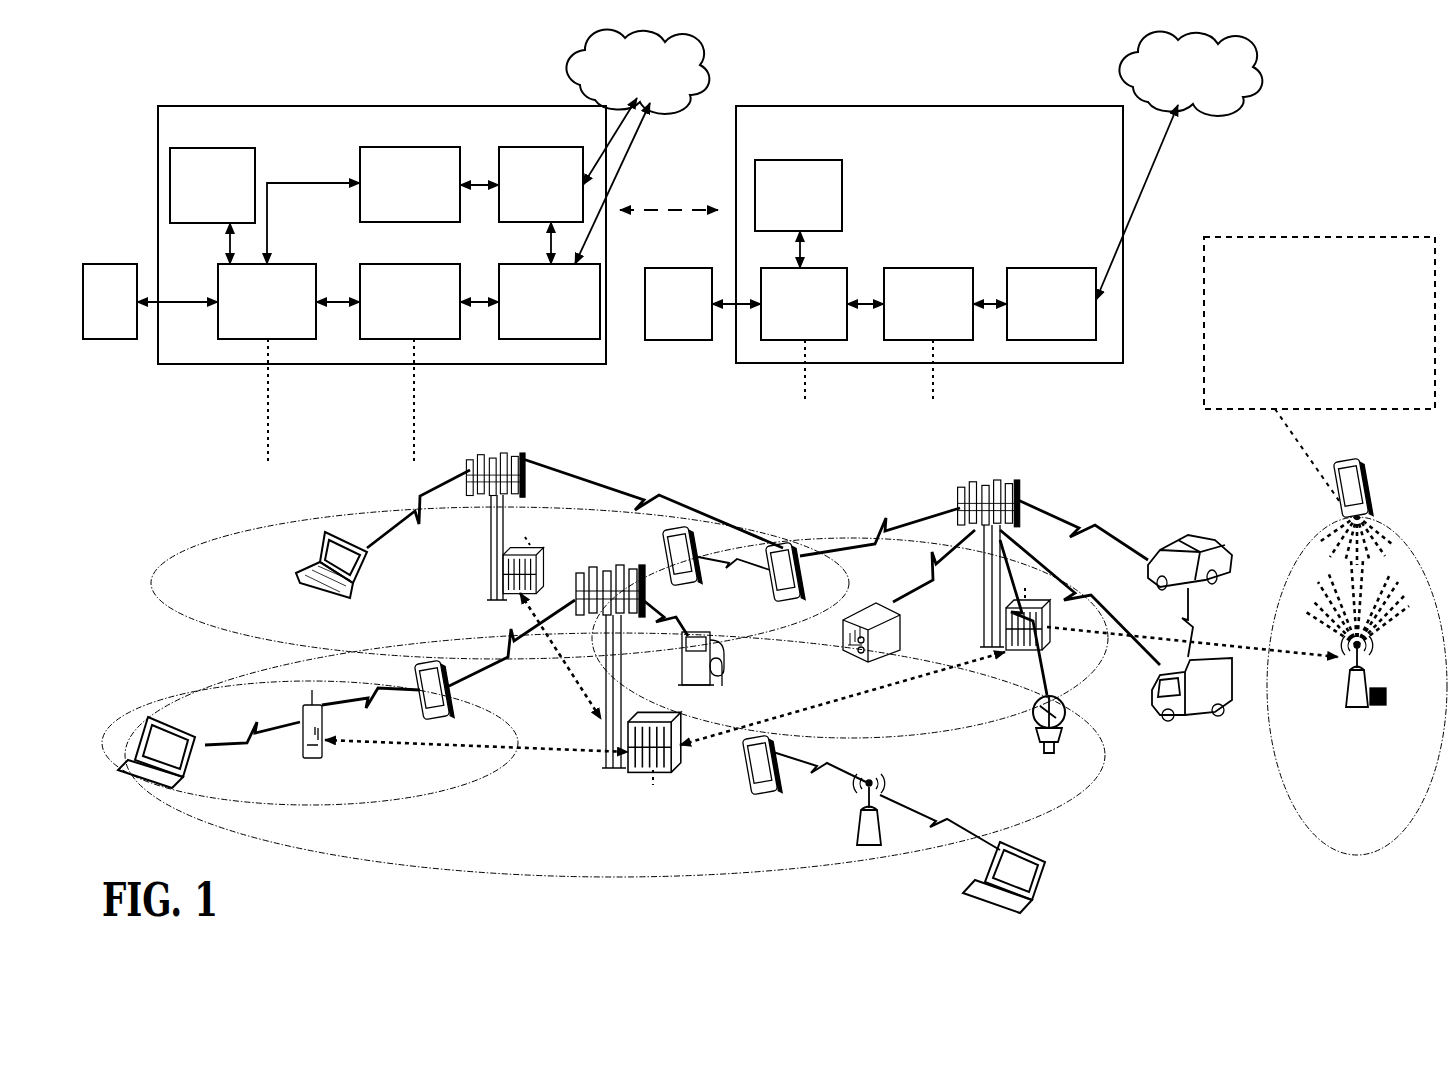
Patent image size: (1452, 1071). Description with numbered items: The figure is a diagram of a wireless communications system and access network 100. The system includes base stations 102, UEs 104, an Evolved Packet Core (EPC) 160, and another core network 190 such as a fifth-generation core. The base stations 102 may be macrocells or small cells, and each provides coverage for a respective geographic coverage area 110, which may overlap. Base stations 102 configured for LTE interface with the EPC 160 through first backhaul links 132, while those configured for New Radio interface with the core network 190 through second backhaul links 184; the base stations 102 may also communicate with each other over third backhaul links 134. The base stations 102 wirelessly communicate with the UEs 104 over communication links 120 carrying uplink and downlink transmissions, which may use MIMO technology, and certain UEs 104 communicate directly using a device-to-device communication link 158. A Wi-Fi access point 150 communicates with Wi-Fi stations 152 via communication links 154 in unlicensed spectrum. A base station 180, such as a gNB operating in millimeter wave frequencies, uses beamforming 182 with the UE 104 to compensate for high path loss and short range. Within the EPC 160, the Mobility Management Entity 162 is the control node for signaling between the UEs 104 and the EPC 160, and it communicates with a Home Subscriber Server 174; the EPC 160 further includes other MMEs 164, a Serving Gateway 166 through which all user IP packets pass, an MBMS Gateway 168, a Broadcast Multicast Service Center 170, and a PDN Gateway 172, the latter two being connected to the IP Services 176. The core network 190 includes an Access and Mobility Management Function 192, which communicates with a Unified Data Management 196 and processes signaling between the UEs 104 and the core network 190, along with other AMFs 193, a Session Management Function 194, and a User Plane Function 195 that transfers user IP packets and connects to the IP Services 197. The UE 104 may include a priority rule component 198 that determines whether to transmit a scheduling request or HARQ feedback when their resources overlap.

The wireless communications system and access network 100 is at (148, 80).
The base station 102 is at (490, 557).
The UE 104 is at (350, 598).
The geographic coverage area 110 is at (206, 640).
The communication link 120 is at (412, 492).
The first backhaul link 132 is at (530, 556).
The third backhaul link 134 is at (558, 691).
The Wi-Fi access point 150 is at (869, 848).
The Wi-Fi station 152 is at (748, 769).
The communication link 154 is at (828, 758).
The D2D communication link 158 is at (744, 583).
The Evolved Packet Core 160 is at (382, 235).
The Mobility Management Entity 162 is at (285, 262).
The other MMEs 164 is at (190, 147).
The Serving Gateway 166 is at (425, 262).
The MBMS Gateway 168 is at (400, 147).
The Broadcast Multicast Service Center 170 is at (538, 148).
The PDN Gateway 172 is at (522, 264).
The Home Subscriber Server 174 is at (112, 262).
The IP Services 176 is at (712, 70).
The base station 180 is at (1357, 710).
The beamforming 182 is at (1396, 540).
The second backhaul link 184 is at (812, 374).
The core network 190 is at (929, 234).
The Access and Mobility Management Function 192 is at (818, 265).
The other AMFs 193 is at (798, 157).
The Session Management Function 194 is at (946, 265).
The User Plane Function 195 is at (1075, 265).
The Unified Data Management 196 is at (688, 265).
The IP Services 197 is at (1256, 68).
The priority rule component 198 is at (1362, 230).